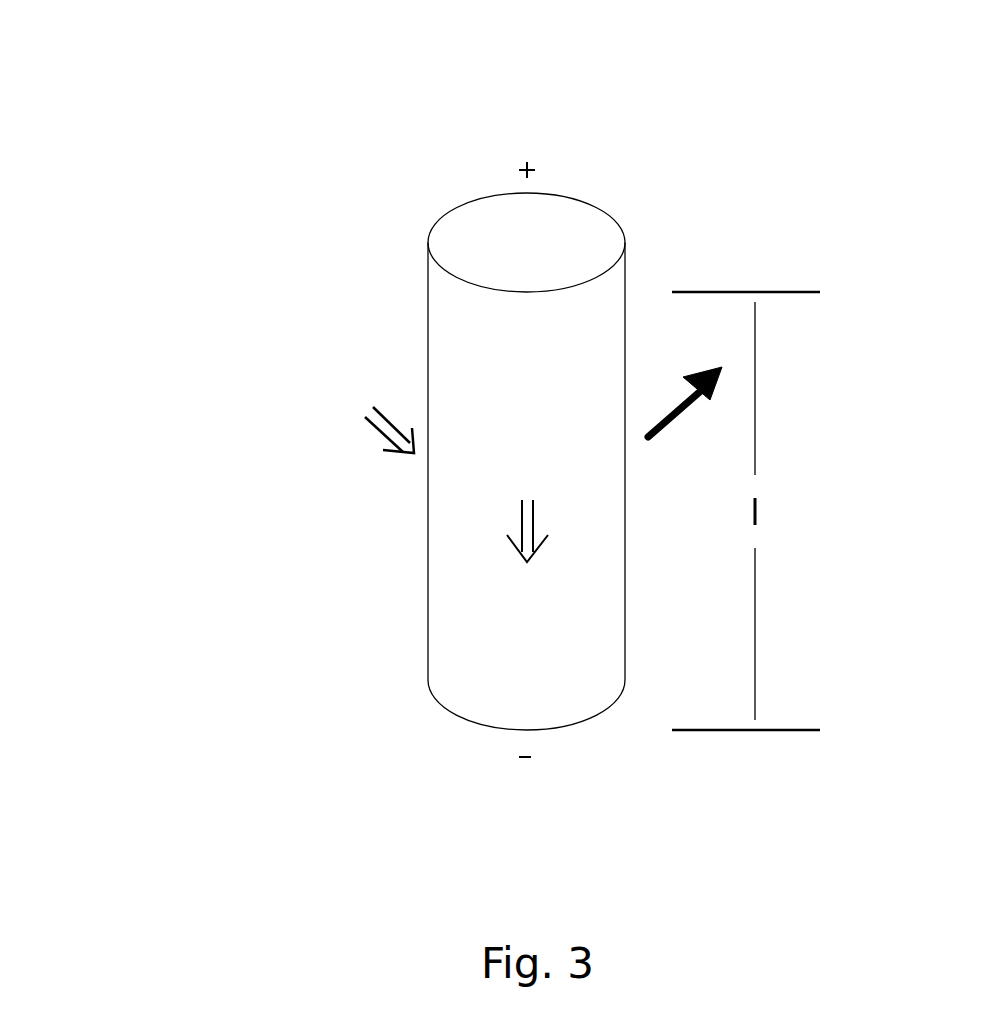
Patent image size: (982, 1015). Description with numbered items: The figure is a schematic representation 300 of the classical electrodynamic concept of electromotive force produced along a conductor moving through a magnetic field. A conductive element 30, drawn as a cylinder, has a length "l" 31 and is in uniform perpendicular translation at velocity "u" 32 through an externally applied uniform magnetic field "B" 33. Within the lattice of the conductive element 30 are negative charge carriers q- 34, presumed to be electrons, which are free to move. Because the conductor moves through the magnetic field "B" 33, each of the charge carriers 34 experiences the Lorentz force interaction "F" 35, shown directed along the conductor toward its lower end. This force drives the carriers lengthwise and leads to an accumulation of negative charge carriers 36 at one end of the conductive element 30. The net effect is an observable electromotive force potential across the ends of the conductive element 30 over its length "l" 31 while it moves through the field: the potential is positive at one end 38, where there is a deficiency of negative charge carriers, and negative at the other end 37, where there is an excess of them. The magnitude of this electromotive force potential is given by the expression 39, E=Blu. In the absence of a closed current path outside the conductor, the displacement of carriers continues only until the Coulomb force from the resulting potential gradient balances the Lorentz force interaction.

The conductor arrangement 300 is at (471, 428).
The conductive element 30 is at (568, 445).
The length "l" 31 is at (770, 511).
The velocity "u" 32 is at (781, 461).
The magnetic field "B" 33 is at (333, 420).
The negative charge carriers q- 34 is at (424, 492).
The Lorentz force interaction "F" 35 is at (434, 538).
The accumulation of negative charge carriers 36 is at (446, 751).
The negative end 37 is at (593, 785).
The positive end 38 is at (585, 143).
The expression E=Blu 39 is at (590, 58).